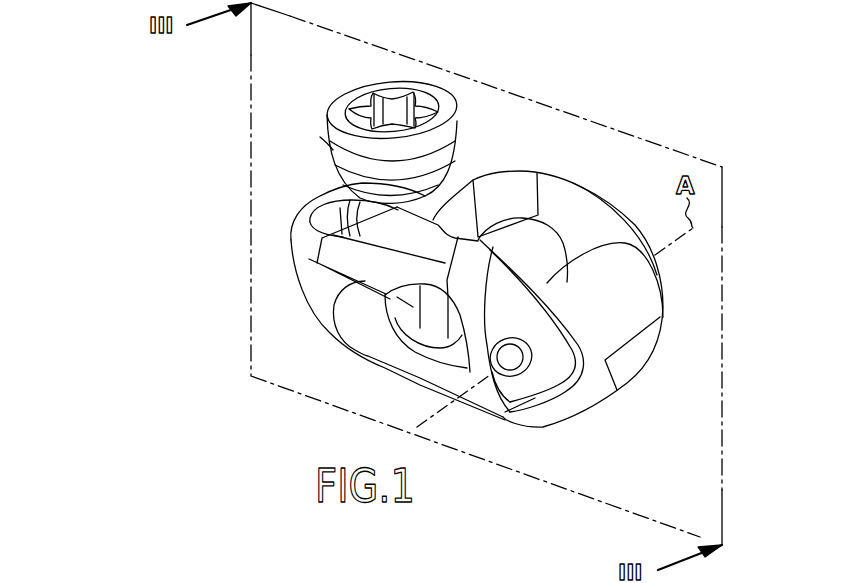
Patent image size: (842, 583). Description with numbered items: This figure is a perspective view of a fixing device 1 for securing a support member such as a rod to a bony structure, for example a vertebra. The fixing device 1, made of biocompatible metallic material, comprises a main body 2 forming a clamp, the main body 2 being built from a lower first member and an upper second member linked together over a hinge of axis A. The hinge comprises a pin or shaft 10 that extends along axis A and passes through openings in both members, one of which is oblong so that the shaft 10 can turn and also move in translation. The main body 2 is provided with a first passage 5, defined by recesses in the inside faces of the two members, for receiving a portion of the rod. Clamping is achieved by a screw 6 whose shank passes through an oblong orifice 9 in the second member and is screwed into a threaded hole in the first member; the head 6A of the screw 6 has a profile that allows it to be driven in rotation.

The fixing device 1 is at (588, 88).
The main body 2 is at (611, 193).
The first passage 5 is at (432, 317).
The screw 6 is at (433, 76).
The head 6A is at (333, 151).
The orifice 9 is at (330, 216).
The shaft 10 is at (512, 363).